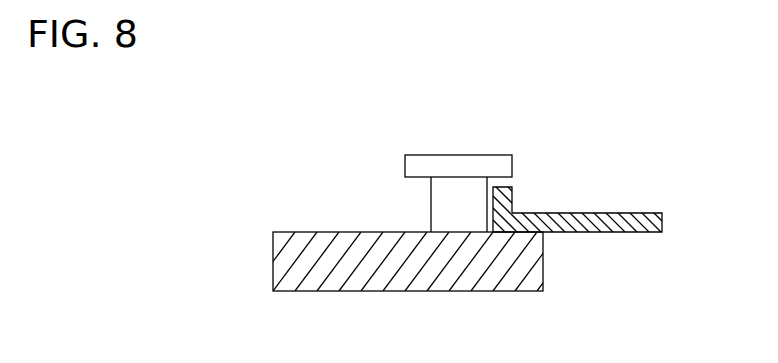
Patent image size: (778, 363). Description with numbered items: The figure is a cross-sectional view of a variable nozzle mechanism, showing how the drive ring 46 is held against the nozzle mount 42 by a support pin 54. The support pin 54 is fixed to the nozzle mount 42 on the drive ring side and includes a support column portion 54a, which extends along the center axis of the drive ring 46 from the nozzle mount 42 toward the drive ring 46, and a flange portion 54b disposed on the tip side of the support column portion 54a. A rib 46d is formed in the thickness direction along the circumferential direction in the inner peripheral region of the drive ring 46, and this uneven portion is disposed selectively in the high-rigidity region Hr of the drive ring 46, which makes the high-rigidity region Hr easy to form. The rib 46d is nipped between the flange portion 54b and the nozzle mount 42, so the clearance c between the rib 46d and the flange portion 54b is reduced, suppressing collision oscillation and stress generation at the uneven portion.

The nozzle mount 42 is at (338, 232).
The drive ring 46 is at (620, 213).
The rib 46d is at (513, 203).
The support pin 54 is at (417, 139).
The support column portion 54a is at (443, 192).
The flange portion 54b is at (405, 165).
The high-rigidity region Hr is at (595, 159).
The clearance c is at (512, 177).